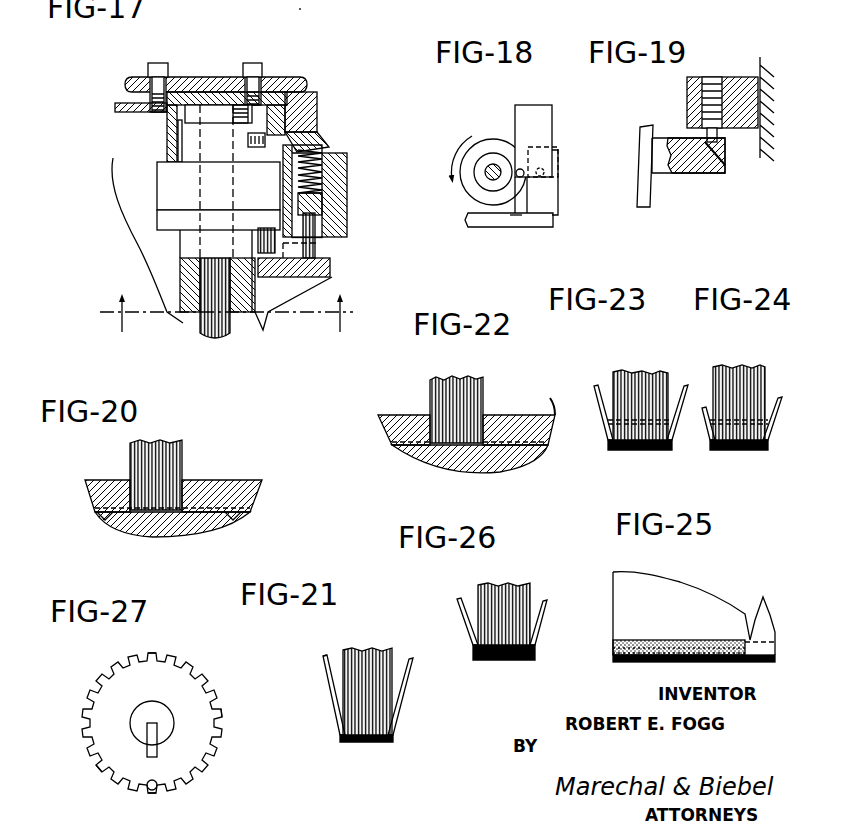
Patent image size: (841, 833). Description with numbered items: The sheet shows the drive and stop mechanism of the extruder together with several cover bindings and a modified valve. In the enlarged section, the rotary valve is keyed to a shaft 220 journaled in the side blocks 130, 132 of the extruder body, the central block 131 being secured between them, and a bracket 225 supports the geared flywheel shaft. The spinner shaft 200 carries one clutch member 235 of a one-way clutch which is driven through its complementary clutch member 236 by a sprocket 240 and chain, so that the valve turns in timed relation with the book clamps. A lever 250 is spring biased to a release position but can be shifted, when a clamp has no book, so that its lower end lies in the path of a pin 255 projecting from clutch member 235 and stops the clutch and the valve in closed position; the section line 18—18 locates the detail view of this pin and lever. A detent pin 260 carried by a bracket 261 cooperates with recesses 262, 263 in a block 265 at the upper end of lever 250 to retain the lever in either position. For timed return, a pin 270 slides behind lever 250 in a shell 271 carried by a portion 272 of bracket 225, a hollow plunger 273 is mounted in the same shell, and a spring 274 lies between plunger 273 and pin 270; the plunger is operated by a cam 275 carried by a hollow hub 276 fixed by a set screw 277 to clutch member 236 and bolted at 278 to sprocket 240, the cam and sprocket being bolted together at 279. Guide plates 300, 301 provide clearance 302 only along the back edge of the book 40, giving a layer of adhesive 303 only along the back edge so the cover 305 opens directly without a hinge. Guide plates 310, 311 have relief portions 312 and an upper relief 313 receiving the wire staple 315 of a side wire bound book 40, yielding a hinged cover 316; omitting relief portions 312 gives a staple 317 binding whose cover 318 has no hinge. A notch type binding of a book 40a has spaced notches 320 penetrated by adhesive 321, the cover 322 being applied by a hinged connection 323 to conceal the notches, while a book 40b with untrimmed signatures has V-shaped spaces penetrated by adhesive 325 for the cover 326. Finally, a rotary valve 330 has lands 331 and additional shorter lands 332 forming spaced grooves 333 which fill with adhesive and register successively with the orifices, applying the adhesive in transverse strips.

In FIG. 17, the section line 18— 18 is at (229, 329).
In FIG. 22, the book 40 is at (475, 380).
In FIG. 23, the book 40 is at (640, 372).
In FIG. 24, the book 40 is at (735, 365).
In FIG. 20, the book 40 is at (178, 442).
In FIG. 21, the book 40 is at (365, 655).
In FIG. 25, the book 40a is at (680, 590).
In FIG. 26, the book 40b is at (507, 590).
In FIG. 20, the side block 130 is at (100, 518).
In FIG. 22, the central block 131 is at (495, 468).
In FIG. 20, the central block 131 is at (173, 537).
In FIG. 20, the side block 132 is at (240, 525).
In FIG. 17, the shaft 200 is at (208, 336).
In FIG. 17, the shaft 220 is at (305, 5).
In FIG. 17, the bracket 225 is at (257, 325).
In FIG. 17, the clutch member 235 is at (157, 222).
In FIG. 18, the clutch member 235 is at (487, 146).
In FIG. 17, the clutch member 236 is at (157, 193).
In FIG. 17, the sprocket 240 is at (283, 77).
In FIG. 17, the lever 250 is at (330, 272).
In FIG. 18, the lever 250 is at (540, 113).
In FIG. 19, the lever 250 is at (647, 212).
In FIG. 17, the pin 255 is at (258, 238).
In FIG. 18, the pin 255 is at (512, 215).
In FIG. 19, the detent pin 260 is at (700, 125).
In FIG. 19, the bracket 261 is at (742, 77).
In FIG. 19, the recess 262 is at (715, 170).
In FIG. 19, the recess 263 is at (725, 160).
In FIG. 19, the block 265 is at (690, 175).
In FIG. 17, the pin 270 is at (315, 250).
In FIG. 18, the pin 270 is at (560, 163).
In FIG. 17, the shell 271 is at (330, 215).
In FIG. 17, the portion of bracket 272 is at (347, 192).
In FIG. 17, the hollow plunger 273 is at (322, 139).
In FIG. 17, the spring 274 is at (347, 160).
In FIG. 17, the cam 275 is at (300, 112).
In FIG. 17, the hollow hub 276 is at (167, 133).
In FIG. 17, the set screw 277 is at (266, 138).
In FIG. 17, the bolt 278 is at (250, 63).
In FIG. 17, the bolt 279 is at (158, 63).
In FIG. 20, the guide plate 300 is at (103, 480).
In FIG. 20, the guide plate 301 is at (228, 480).
In FIG. 20, the clearance 302 is at (148, 513).
In FIG. 21, the layer of adhesive 303 is at (367, 742).
In FIG. 21, the cover 305 is at (332, 692).
In FIG. 22, the guide plate 310 is at (395, 420).
In FIG. 22, the guide plate 311 is at (549, 415).
In FIG. 22, the relief portion 312 is at (430, 438).
In FIG. 22, the relief 313 is at (425, 415).
In FIG. 22, the wire staple 315 is at (492, 418).
In FIG. 23, the wire staple 315 is at (677, 385).
In FIG. 23, the cover 316 is at (596, 398).
In FIG. 24, the staple 317 is at (779, 397).
In FIG. 24, the cover 318 is at (705, 445).
In FIG. 25, the notches 320 is at (700, 645).
In FIG. 25, the adhesive 321 is at (635, 642).
In FIG. 25, the cover 322 is at (760, 632).
In FIG. 25, the hinged connection 323 is at (650, 640).
In FIG. 26, the adhesive 325 is at (499, 660).
In FIG. 26, the cover 326 is at (462, 606).
In FIG. 27, the rotary valve 330 is at (110, 710).
In FIG. 27, the lands 331 is at (157, 652).
In FIG. 27, the shorter lands 332 is at (105, 776).
In FIG. 27, the grooves 333 is at (222, 707).